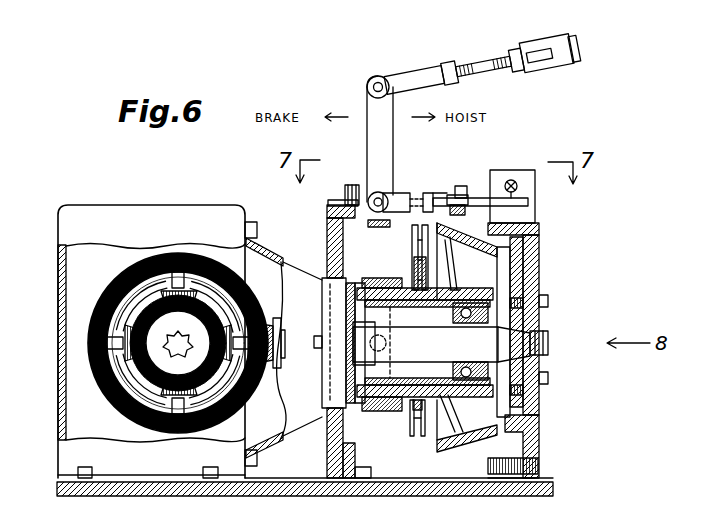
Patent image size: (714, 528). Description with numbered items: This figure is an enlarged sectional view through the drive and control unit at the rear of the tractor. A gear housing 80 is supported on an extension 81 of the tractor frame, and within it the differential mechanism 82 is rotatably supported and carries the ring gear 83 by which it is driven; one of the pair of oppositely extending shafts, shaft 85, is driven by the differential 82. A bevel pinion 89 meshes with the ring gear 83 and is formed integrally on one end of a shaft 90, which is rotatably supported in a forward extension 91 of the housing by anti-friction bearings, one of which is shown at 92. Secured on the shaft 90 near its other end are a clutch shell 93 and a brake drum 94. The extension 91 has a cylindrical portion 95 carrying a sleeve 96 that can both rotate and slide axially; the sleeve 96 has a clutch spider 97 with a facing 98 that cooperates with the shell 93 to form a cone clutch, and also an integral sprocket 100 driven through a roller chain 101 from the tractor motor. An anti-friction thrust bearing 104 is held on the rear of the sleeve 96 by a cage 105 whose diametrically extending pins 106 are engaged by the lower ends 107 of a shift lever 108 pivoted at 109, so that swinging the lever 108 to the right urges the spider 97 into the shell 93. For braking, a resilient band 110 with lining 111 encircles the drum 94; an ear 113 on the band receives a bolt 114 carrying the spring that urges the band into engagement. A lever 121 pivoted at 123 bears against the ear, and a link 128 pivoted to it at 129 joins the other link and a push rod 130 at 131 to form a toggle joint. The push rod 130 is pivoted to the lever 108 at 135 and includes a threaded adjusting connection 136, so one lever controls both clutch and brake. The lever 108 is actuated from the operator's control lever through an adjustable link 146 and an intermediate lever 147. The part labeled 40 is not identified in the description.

The control linkage assembly 40 is at (525, 144).
The gear housing 80 is at (58, 232).
The extension of the tractor frame 81 is at (110, 496).
The differential mechanism 82 is at (131, 310).
The ring gear 83 is at (92, 352).
The shaft 85 is at (122, 400).
The bevel pinion 89 is at (265, 328).
The shaft 90 is at (487, 353).
The forward extension of the housing 91 is at (268, 438).
The anti-friction bearing 92 is at (490, 382).
The clutch shell 93 is at (533, 233).
The brake drum 94 is at (536, 275).
The cylindrical portion 95 is at (541, 378).
The sleeve 96 is at (508, 388).
The clutch spider 97 is at (461, 320).
The facing 98 is at (455, 446).
The sprocket 100 is at (416, 438).
The roller chain 101 is at (400, 211).
The anti-friction thrust bearing 104 is at (372, 404).
The cage 105 is at (330, 401).
The pins 106 is at (386, 344).
The lower ends of the shift lever 107 is at (377, 238).
The shift lever 108 is at (386, 193).
The pivot 109 is at (343, 358).
The resilient band 110 is at (535, 478).
The lining 111 is at (540, 465).
The ear 113 is at (518, 192).
The bolt 114 is at (505, 185).
The lever 121 is at (359, 200).
The pivot 123 is at (336, 198).
The link 128 is at (517, 186).
The pivot 129 is at (475, 197).
The push rod 130 is at (416, 195).
The pivot 131 is at (462, 186).
The pivot 135 is at (372, 182).
The threaded connection means 136 is at (447, 198).
The adjustable link 146 is at (478, 70).
The intermediate lever 147 is at (575, 50).